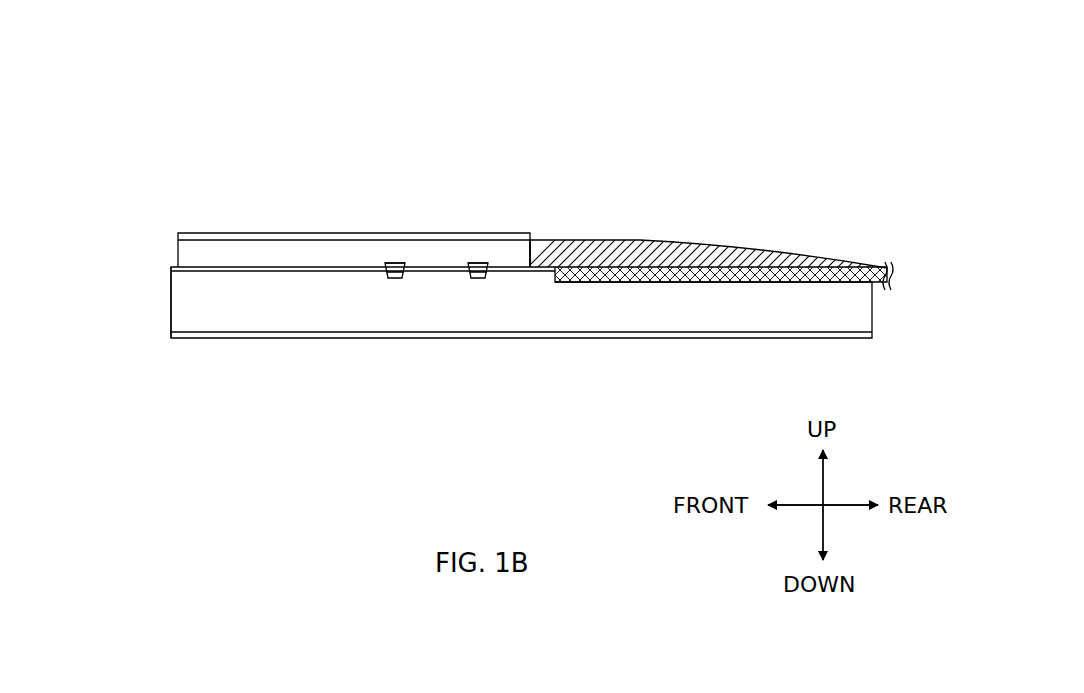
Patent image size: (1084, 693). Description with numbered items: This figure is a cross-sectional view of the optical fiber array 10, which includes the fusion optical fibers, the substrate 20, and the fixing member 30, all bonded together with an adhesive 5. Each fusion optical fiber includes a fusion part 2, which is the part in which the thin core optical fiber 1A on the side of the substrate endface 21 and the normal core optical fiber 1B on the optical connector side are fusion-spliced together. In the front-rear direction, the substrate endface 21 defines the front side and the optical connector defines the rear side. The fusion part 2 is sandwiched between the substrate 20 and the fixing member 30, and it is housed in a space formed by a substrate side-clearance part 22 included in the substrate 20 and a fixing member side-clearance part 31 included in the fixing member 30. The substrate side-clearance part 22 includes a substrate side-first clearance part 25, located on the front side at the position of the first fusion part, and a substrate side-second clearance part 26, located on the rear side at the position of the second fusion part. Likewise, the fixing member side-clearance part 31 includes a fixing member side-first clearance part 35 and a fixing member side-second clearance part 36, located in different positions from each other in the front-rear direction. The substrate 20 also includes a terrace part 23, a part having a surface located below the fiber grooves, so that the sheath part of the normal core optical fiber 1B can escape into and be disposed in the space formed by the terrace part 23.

The optical fiber array 10 is at (531, 114).
The thin core optical fiber 1A is at (232, 268).
The normal core optical fiber 1B is at (760, 245).
The fusion part 2 is at (498, 263).
The adhesive 5 is at (648, 240).
The substrate 20 is at (345, 318).
The substrate endface 21 is at (171, 300).
The substrate side-clearance part 22 is at (510, 400).
The terrace part 23 is at (721, 283).
The substrate side-first clearance part 25 is at (383, 283).
The substrate side-second clearance part 26 is at (465, 283).
The fixing member 30 is at (300, 235).
The fixing member side-clearance part 31 is at (422, 208).
The fixing member side-first clearance part 35 is at (388, 263).
The fixing member side-second clearance part 36 is at (473, 263).